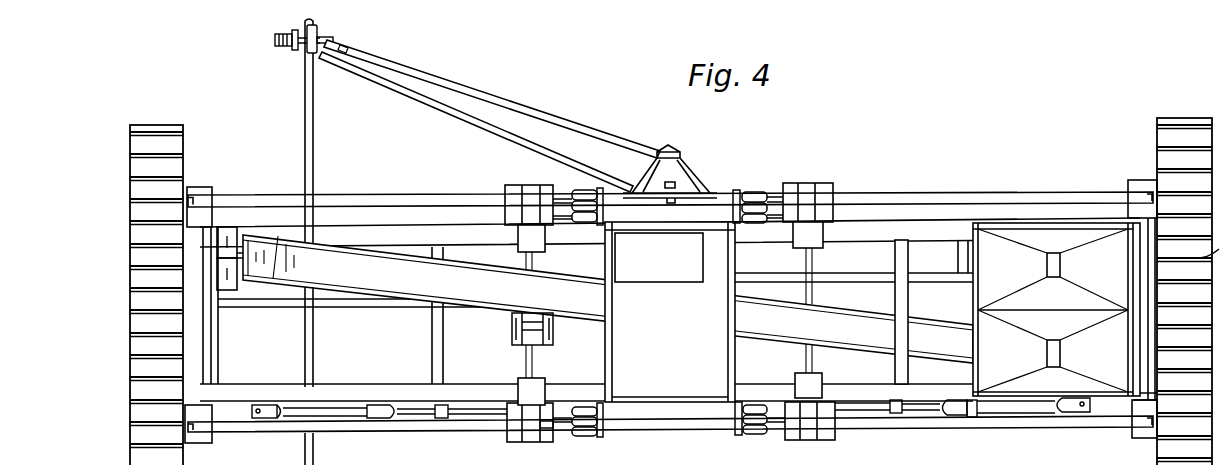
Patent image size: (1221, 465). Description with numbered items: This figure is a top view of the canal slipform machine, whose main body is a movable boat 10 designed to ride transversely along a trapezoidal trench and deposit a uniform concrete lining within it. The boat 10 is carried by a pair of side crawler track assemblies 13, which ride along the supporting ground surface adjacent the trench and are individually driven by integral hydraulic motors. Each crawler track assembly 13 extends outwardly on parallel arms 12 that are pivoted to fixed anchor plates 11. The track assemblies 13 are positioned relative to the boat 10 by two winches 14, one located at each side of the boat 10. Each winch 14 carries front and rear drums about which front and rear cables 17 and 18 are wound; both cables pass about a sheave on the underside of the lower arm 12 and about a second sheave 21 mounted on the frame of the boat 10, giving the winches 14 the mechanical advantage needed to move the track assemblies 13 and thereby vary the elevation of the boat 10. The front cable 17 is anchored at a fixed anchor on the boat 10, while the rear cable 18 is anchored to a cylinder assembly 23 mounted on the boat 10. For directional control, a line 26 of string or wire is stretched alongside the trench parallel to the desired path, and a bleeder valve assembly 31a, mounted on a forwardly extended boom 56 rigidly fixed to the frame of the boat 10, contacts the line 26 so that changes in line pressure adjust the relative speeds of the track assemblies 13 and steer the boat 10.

The movable boat 10 is at (875, 245).
The fixed anchor plate 11 is at (515, 185).
The parallel arm 12 is at (447, 199).
The crawler track assembly 13 is at (180, 167).
The winch 14 is at (556, 330).
The front cable 17 is at (558, 197).
The rear cable 18 is at (564, 433).
The second sheave 21 is at (590, 198).
The cylinder assembly 23 is at (337, 424).
The line 26 is at (305, 129).
The bleeder valve assembly 31a is at (326, 35).
The boom 56 is at (545, 120).